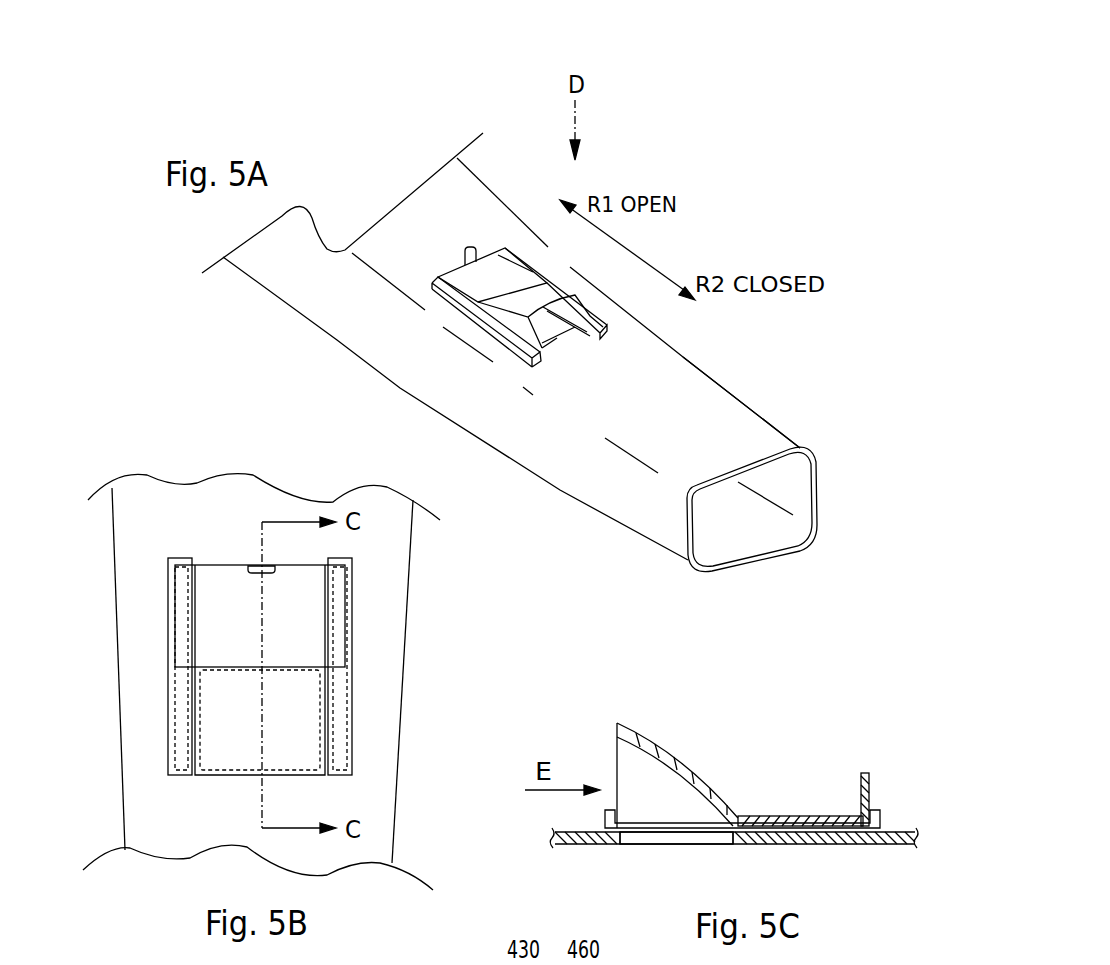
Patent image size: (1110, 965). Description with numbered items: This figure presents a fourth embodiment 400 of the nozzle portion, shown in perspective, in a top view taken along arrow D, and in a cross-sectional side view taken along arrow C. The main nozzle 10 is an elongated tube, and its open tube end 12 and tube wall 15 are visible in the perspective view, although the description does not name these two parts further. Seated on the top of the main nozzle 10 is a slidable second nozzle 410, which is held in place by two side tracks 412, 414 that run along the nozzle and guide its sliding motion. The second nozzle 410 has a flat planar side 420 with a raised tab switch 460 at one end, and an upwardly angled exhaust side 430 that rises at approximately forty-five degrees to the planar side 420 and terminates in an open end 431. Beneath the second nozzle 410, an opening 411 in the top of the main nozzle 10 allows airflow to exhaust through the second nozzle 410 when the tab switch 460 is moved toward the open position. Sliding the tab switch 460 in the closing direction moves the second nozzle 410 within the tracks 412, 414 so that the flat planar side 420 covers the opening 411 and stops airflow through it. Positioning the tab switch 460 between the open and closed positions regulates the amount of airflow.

In FIG. 5A, the main nozzle 10 is at (465, 207).
In FIG. 5B, the main nozzle 10 is at (261, 682).
In FIG. 5C, the main nozzle 10 is at (845, 842).
In FIG. 5A, the open end of tube 12 is at (763, 525).
In FIG. 5A, the tube wall 15 is at (640, 352).
In FIG. 5A, the fourth embodiment 400 is at (457, 100).
In FIG. 5A, the slidable second nozzle 410 is at (484, 319).
In FIG. 5B, the slidable second nozzle 410 is at (258, 636).
In FIG. 5C, the slidable second nozzle 410 is at (752, 735).
In FIG. 5A, the opening 411 is at (557, 338).
In FIG. 5B, the opening 411 is at (295, 745).
In FIG. 5C, the opening 411 is at (708, 837).
In FIG. 5A, the side track 412 is at (472, 316).
In FIG. 5B, the side track 412 is at (178, 690).
In FIG. 5A, the side track 414 is at (520, 267).
In FIG. 5B, the side track 414 is at (338, 610).
In FIG. 5A, the flat planar side 420 is at (453, 275).
In FIG. 5B, the flat planar side 420 is at (260, 616).
In FIG. 5C, the flat planar side 420 is at (785, 815).
In FIG. 5A, the exhaust side 430 is at (540, 321).
In FIG. 5C, the exhaust side 430 is at (668, 760).
In FIG. 5C, the open end 431 is at (585, 752).
In FIG. 5A, the tab switch 460 is at (463, 250).
In FIG. 5B, the tab switch 460 is at (272, 578).
In FIG. 5C, the tab switch 460 is at (870, 780).